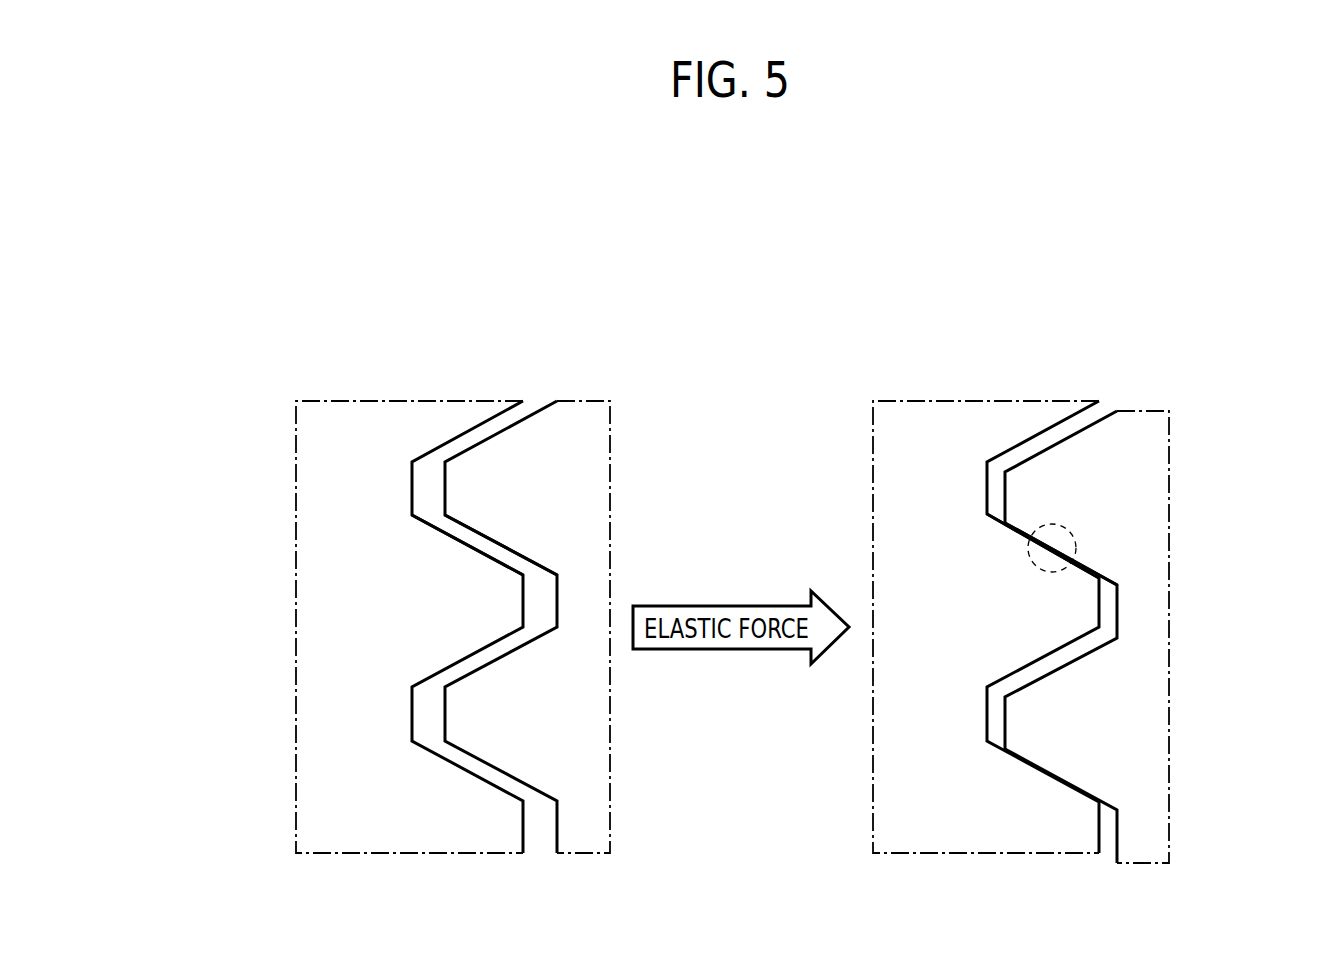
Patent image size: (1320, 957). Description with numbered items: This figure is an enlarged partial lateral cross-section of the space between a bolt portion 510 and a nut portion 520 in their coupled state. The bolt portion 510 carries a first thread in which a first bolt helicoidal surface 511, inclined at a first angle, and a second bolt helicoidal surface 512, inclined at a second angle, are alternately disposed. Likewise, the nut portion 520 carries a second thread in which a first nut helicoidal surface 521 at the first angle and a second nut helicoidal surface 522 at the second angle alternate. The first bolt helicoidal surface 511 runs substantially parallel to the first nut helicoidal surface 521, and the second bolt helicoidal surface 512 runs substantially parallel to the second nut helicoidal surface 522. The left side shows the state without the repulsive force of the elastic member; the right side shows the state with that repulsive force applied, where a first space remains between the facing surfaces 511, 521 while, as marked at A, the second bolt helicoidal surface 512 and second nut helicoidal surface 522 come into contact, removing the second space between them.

The bolt portion 510 is at (584, 401).
The first bolt helicoidal surface 511 is at (492, 427).
The second bolt helicoidal surface 512 is at (508, 547).
The nut portion 520 is at (348, 401).
The first nut helicoidal surface 521 is at (425, 452).
The second nut helicoidal surface 522 is at (437, 528).
The contact region A is at (1073, 535).